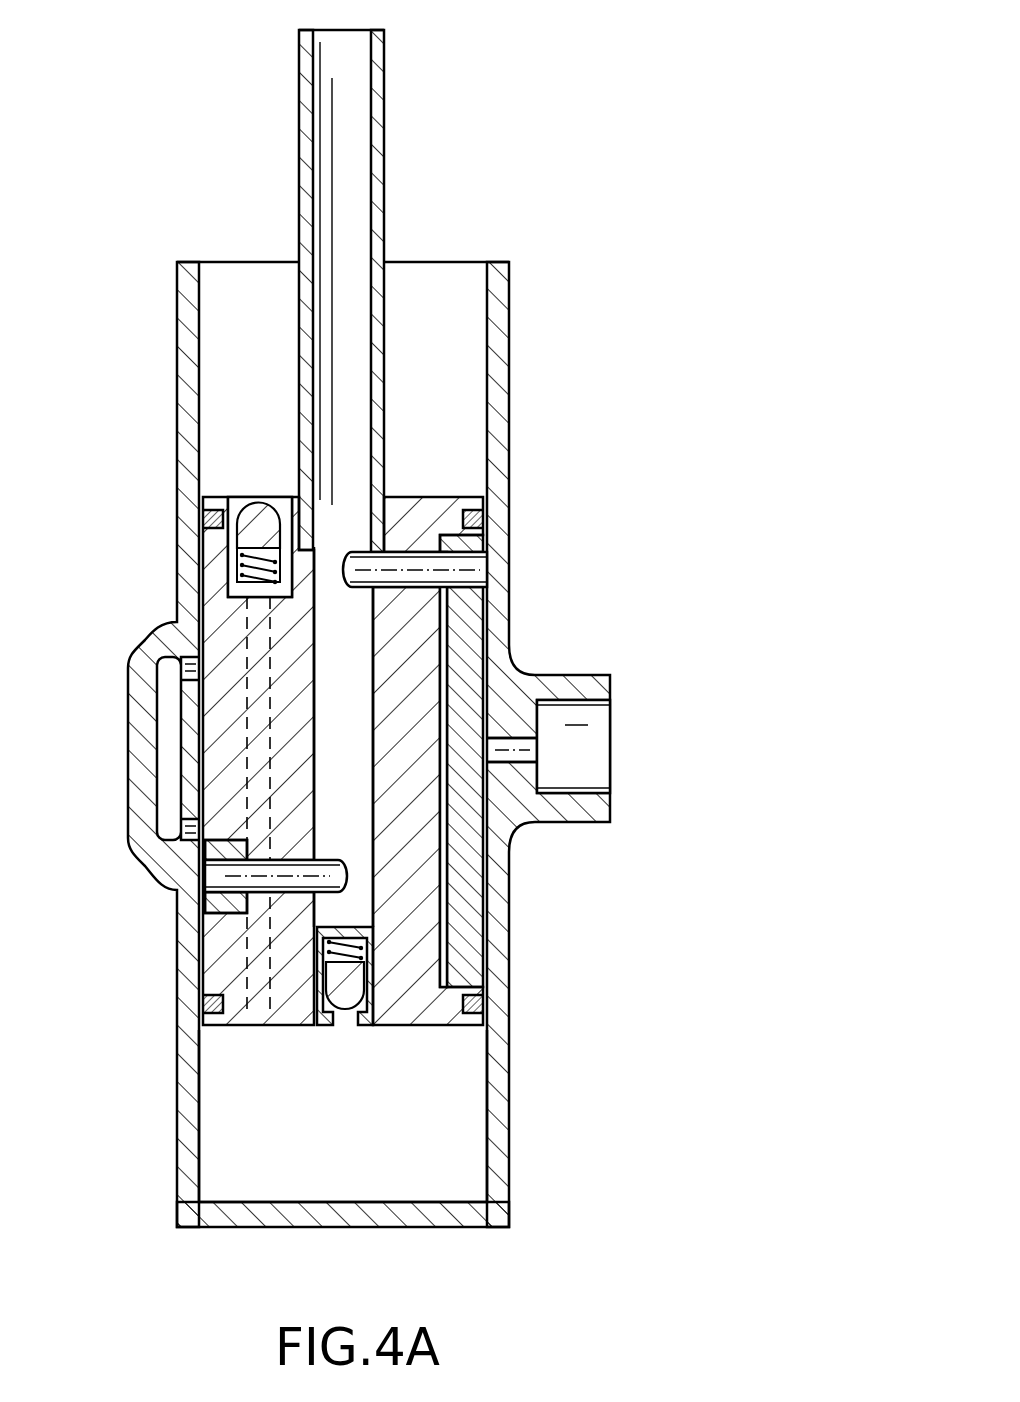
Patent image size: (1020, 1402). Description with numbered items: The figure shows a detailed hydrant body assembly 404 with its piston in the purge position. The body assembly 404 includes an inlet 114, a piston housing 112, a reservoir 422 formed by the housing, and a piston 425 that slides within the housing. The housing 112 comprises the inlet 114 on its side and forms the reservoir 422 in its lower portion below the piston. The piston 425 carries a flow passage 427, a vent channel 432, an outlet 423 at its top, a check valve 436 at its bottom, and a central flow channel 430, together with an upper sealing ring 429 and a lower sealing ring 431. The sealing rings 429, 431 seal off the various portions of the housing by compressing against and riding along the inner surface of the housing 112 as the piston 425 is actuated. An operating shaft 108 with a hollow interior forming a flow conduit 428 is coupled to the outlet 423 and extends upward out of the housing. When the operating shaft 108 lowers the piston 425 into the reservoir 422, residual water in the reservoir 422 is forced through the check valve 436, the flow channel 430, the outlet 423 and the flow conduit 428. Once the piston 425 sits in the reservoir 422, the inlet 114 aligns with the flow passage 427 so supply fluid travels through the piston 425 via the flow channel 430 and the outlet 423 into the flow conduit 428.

The operating shaft 108 is at (386, 62).
The flow conduit 428 is at (360, 138).
The body assembly 404 is at (632, 164).
The piston housing 112 is at (509, 315).
The outlet 423 is at (383, 493).
The upper sealing ring 429 is at (485, 518).
The piston 425 is at (217, 622).
The flow passage 427 is at (440, 572).
The flow channel 430 is at (360, 633).
The inlet 114 is at (611, 745).
The vent channel 432 is at (250, 940).
The lower sealing ring 431 is at (485, 1003).
The check valve 436 is at (343, 1027).
The reservoir 422 is at (465, 1165).